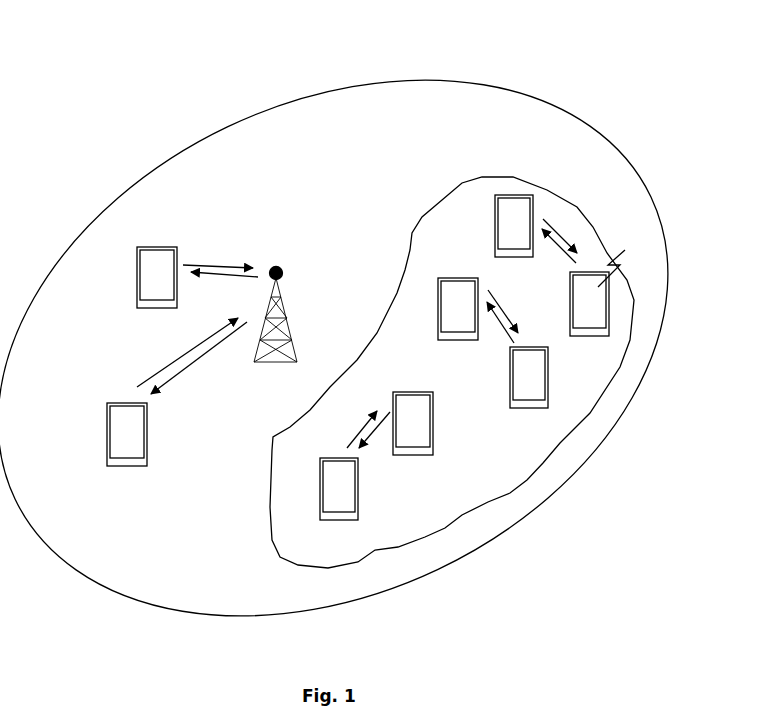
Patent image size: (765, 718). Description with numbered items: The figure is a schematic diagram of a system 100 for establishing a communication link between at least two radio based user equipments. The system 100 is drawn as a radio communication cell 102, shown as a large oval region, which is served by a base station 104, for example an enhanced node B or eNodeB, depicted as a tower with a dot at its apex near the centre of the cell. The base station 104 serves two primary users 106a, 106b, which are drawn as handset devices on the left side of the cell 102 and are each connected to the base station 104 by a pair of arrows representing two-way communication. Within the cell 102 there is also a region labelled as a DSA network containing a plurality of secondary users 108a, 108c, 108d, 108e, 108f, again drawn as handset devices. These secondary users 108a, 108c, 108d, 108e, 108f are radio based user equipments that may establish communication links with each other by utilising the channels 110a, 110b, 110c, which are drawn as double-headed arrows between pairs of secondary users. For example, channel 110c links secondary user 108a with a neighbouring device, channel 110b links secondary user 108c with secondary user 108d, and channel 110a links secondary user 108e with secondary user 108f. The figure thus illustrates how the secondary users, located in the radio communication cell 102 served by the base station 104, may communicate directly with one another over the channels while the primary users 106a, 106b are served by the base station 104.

The system 100 is at (178, 124).
The radio communication cell 102 is at (120, 197).
The base station 104 is at (283, 266).
The primary user 106a is at (137, 270).
The primary user 106b is at (107, 435).
The secondary user 108a is at (523, 192).
The secondary user 108c is at (438, 317).
The secondary user 108d is at (548, 380).
The secondary user 108e is at (447, 390).
The secondary user 108f is at (327, 515).
The channel 110a is at (360, 425).
The channel 110b is at (483, 291).
The channel 110c is at (560, 231).